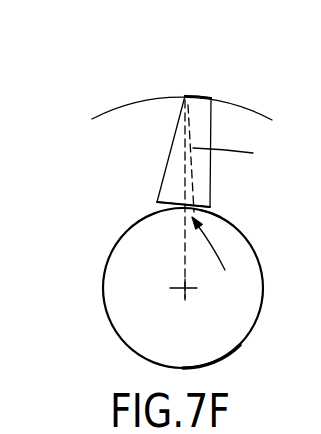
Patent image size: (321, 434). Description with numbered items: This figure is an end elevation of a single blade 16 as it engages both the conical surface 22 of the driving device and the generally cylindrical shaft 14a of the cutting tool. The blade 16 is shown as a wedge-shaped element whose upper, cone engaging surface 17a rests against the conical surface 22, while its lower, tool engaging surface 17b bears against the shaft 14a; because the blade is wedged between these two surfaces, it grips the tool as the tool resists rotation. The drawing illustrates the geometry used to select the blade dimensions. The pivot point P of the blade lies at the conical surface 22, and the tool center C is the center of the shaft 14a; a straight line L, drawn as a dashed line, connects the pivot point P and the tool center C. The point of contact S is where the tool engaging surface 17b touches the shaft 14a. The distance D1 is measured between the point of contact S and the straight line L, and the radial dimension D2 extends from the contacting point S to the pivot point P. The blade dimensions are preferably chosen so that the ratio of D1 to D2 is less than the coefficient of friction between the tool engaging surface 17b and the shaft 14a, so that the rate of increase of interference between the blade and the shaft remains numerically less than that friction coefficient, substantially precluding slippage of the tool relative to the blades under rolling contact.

The shaft 14a is at (259, 309).
The conical surface 22 is at (255, 112).
The blade 16 is at (148, 147).
The cone engaging surface 17a is at (205, 96).
The tool engaging surface 17b is at (160, 203).
The pivot point P is at (185, 95).
The straight line L is at (183, 237).
The tool center C is at (183, 290).
The radial dimension D2 is at (237, 159).
The distance D1 is at (217, 262).
The point of contact S is at (196, 210).